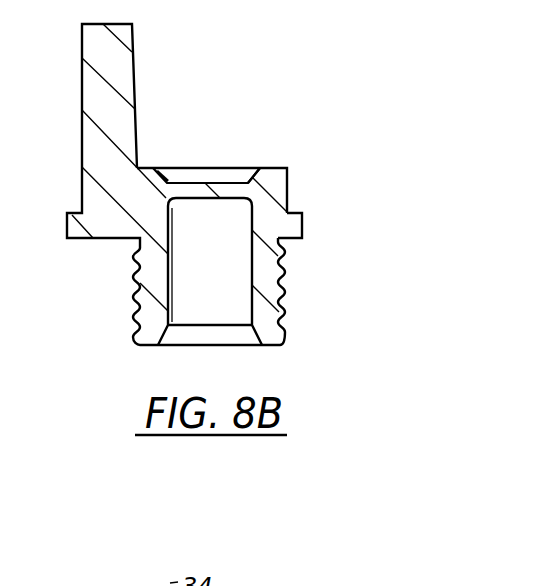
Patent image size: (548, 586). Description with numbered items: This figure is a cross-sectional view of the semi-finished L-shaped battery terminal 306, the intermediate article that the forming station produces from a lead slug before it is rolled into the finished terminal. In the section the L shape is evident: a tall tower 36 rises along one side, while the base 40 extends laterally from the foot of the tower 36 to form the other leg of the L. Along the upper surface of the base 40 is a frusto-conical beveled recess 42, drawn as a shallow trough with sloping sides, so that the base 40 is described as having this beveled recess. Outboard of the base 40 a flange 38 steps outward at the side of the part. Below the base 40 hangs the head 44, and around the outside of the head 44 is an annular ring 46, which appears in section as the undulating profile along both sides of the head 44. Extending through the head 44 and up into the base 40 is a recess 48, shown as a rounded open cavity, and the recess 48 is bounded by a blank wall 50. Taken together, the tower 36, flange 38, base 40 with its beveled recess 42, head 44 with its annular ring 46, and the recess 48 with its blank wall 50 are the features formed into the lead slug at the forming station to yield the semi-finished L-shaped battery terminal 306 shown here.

The semi-finished L-shaped battery terminal 306 is at (287, 66).
The tower 36 is at (133, 56).
The flange 38 is at (299, 223).
The base 40 is at (288, 179).
The frusto-conical beveled recess 42 is at (250, 168).
The head 44 is at (301, 341).
The annular ring 46 is at (285, 277).
The recess 48 is at (192, 318).
The blank wall 50 is at (190, 183).